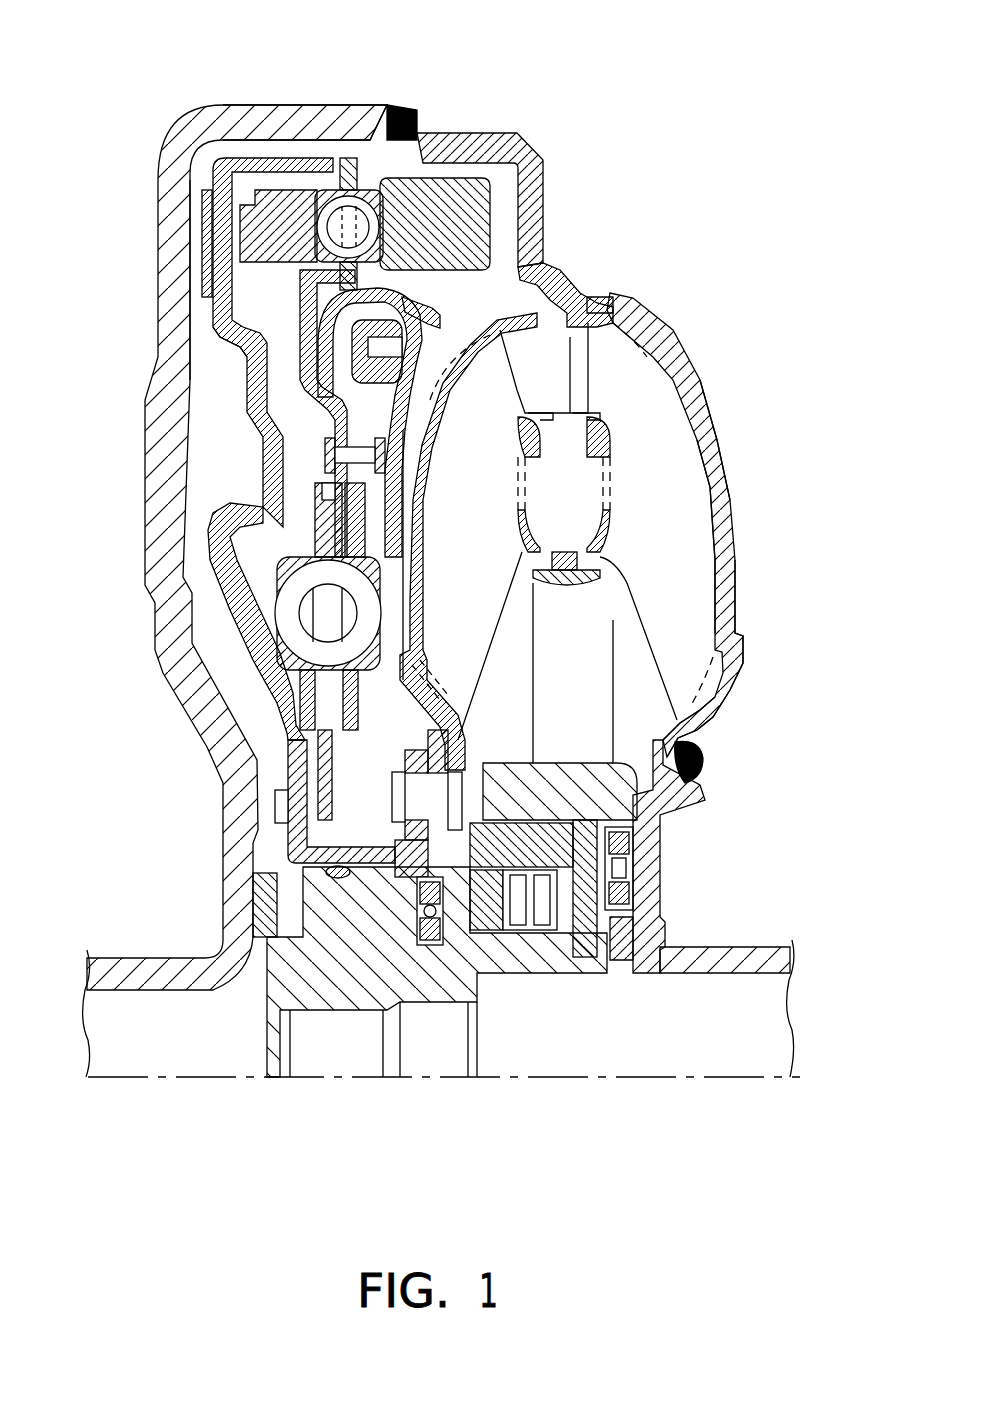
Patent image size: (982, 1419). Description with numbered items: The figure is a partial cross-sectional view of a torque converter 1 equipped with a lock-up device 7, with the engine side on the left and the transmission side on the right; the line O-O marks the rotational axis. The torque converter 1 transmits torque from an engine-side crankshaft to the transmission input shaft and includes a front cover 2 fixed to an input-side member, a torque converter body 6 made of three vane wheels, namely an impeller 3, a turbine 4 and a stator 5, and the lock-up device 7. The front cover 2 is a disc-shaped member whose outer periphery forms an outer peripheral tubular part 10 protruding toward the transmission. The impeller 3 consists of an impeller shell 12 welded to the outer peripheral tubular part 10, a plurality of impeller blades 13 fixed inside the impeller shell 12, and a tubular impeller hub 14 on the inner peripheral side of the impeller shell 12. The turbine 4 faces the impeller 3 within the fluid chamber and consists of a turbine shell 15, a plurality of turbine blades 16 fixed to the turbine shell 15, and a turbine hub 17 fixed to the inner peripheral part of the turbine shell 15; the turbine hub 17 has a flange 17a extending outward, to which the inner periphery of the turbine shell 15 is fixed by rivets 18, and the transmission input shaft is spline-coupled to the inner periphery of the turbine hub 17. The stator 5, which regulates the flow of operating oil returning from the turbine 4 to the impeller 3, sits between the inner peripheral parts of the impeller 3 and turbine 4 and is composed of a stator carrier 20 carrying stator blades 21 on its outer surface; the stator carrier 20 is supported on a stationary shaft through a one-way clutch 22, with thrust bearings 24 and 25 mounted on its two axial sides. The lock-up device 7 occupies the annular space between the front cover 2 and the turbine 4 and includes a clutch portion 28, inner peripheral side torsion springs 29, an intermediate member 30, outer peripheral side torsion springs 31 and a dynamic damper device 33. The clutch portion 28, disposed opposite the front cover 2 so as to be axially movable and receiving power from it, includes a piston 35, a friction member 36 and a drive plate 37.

The torque converter 1 is at (632, 98).
The front cover 2 is at (143, 483).
The impeller 3 is at (705, 383).
The turbine 4 is at (483, 318).
The stator 5 is at (680, 618).
The torque converter body 6 is at (707, 270).
The lock-up device 7 is at (203, 168).
The outer peripheral tubular part 10 is at (318, 108).
The impeller shell 12 is at (705, 423).
The impeller blades 13 is at (690, 491).
The impeller hub 14 is at (725, 958).
The turbine shell 15 is at (500, 393).
The turbine blades 16 is at (490, 401).
The turbine hub 17 is at (357, 1013).
The flange 17a is at (395, 795).
The rivets 18 is at (287, 868).
The stator carrier 20 is at (630, 801).
The stator blades 21 is at (700, 703).
The one-way clutch 22 is at (543, 891).
The thrust bearing 24 is at (417, 918).
The thrust bearing 25 is at (617, 881).
The clutch portion 28 is at (197, 256).
The inner peripheral side torsion springs 29 is at (283, 621).
The intermediate member 30 is at (335, 492).
The outer peripheral side torsion springs 31 is at (423, 338).
The dynamic damper device 33 is at (432, 168).
The piston 35 is at (227, 331).
The friction member 36 is at (205, 213).
The drive plate 37 is at (300, 748).